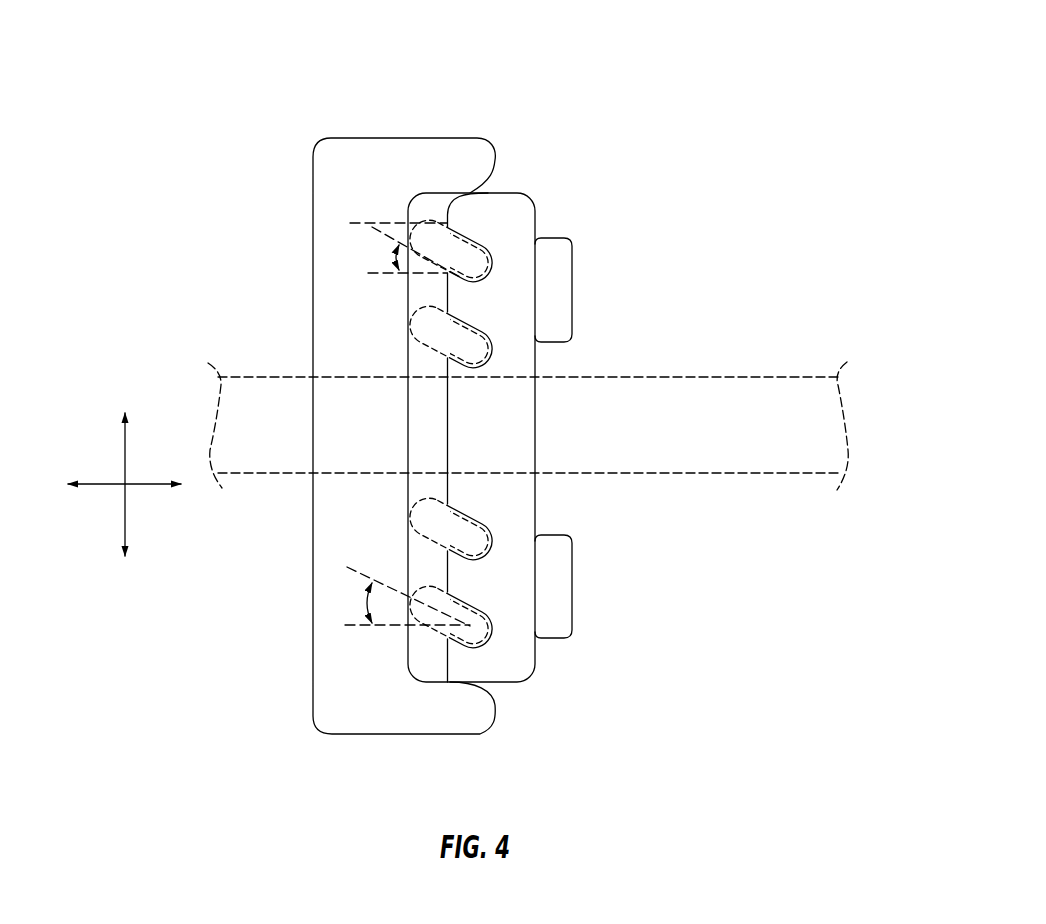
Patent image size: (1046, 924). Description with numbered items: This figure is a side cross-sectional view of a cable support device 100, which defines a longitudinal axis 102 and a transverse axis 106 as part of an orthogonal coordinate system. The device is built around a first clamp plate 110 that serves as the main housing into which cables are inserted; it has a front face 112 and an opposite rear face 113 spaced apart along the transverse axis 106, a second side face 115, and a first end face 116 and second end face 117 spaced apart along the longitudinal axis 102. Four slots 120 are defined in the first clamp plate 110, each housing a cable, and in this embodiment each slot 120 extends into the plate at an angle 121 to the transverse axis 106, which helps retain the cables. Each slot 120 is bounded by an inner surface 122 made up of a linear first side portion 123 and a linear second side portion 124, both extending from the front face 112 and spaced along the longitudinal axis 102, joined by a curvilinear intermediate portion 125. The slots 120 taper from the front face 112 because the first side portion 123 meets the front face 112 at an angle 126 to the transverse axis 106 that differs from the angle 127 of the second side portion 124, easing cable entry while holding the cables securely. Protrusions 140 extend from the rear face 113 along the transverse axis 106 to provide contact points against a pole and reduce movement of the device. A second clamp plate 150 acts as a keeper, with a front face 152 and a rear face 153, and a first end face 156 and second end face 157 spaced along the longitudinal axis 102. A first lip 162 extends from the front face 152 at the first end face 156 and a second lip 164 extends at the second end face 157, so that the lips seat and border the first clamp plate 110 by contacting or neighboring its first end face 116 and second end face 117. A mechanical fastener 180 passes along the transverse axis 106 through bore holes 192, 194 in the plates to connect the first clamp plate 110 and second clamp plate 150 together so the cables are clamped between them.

The cable support device 100 is at (592, 43).
The longitudinal axis 102 is at (125, 446).
The transverse axis 106 is at (105, 484).
The first clamp plate 110 is at (537, 186).
The front face 112 is at (448, 282).
The rear face 113 is at (537, 222).
The second side face 115 is at (503, 650).
The first end face 116 is at (490, 193).
The second end face 117 is at (501, 683).
The slot 120 is at (446, 634).
The angle 121 is at (366, 604).
The inner surface 122 is at (478, 637).
The first side portion 123 is at (452, 222).
The second side portion 124 is at (463, 281).
The intermediate portion 125 is at (493, 254).
The angle 126 is at (397, 221).
The angle 127 is at (399, 258).
The protrusion 140 is at (554, 346).
The second clamp plate 150 is at (281, 155).
The front face 152 is at (420, 628).
The rear face 153 is at (313, 645).
The first end face 156 is at (363, 138).
The second end face 157 is at (345, 735).
The first lip 162 is at (465, 160).
The second lip 164 is at (442, 736).
The mechanical fastener 180 is at (240, 473).
The bore hole 192 is at (524, 427).
The bore hole 194 is at (356, 410).